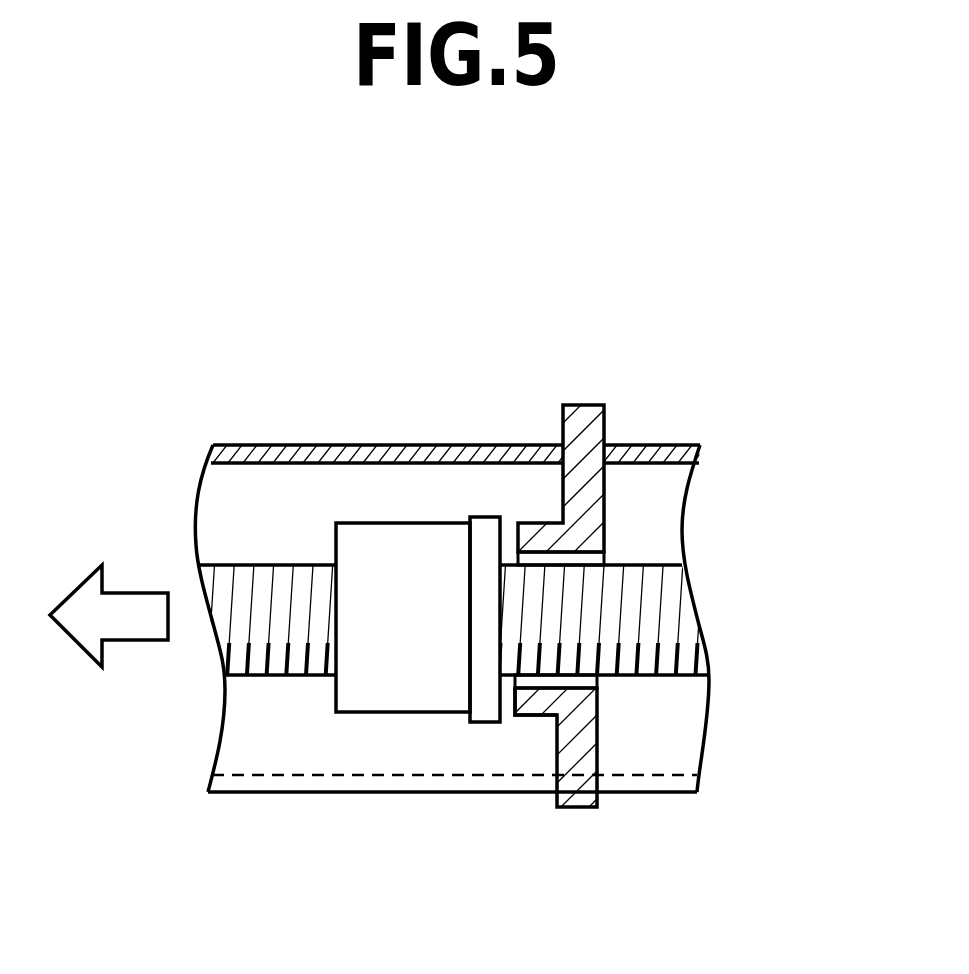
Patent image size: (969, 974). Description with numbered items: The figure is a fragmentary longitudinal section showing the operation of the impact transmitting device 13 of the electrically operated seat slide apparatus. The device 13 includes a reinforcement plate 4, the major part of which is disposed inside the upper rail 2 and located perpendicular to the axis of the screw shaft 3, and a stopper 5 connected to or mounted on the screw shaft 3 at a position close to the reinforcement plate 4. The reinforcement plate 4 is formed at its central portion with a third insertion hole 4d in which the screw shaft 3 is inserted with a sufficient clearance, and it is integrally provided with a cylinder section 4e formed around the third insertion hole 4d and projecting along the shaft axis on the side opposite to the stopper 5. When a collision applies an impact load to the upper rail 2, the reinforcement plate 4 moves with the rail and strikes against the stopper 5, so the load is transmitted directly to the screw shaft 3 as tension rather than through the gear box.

The upper rail 2 is at (668, 452).
The screw shaft 3 is at (648, 612).
The reinforcement plate 4 is at (604, 605).
The third insertion hole 4d is at (592, 682).
The cylinder section 4e is at (537, 702).
The stopper 5 is at (378, 537).
The impact transmitting device 13 is at (390, 283).